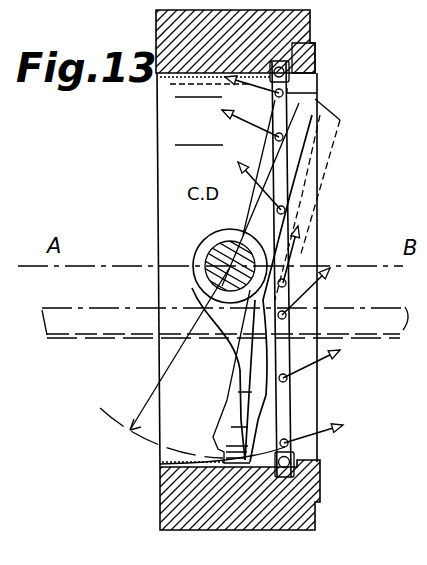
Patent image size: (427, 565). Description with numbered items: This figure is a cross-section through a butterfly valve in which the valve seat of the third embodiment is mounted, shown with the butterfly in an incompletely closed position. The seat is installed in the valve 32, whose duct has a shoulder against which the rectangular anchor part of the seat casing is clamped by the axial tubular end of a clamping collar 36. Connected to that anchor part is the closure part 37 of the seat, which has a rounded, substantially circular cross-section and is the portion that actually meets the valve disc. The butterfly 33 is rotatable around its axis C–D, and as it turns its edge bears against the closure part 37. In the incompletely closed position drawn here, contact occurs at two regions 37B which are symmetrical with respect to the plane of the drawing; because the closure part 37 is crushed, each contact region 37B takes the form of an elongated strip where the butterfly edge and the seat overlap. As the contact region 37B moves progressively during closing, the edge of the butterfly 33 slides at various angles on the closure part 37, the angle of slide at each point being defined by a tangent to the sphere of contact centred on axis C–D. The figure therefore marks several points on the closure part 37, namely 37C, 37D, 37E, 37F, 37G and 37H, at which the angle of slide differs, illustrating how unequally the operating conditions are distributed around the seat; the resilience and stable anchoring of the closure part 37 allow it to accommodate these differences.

The valve 32 is at (302, 22).
The clamping collar 36 is at (315, 53).
The closure part 37 is at (288, 88).
The point on closure part 37H is at (292, 95).
The point on closure part 37G is at (284, 137).
The point on closure part 37F is at (285, 210).
The contact region 37B is at (286, 280).
The point on closure part 37E is at (286, 315).
The point on closure part 37D is at (288, 377).
The point on closure part 37C is at (289, 441).
The butterfly 33 is at (222, 415).